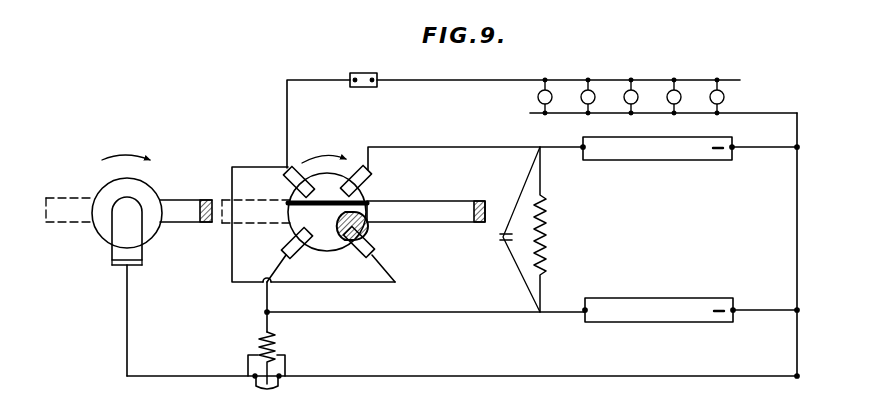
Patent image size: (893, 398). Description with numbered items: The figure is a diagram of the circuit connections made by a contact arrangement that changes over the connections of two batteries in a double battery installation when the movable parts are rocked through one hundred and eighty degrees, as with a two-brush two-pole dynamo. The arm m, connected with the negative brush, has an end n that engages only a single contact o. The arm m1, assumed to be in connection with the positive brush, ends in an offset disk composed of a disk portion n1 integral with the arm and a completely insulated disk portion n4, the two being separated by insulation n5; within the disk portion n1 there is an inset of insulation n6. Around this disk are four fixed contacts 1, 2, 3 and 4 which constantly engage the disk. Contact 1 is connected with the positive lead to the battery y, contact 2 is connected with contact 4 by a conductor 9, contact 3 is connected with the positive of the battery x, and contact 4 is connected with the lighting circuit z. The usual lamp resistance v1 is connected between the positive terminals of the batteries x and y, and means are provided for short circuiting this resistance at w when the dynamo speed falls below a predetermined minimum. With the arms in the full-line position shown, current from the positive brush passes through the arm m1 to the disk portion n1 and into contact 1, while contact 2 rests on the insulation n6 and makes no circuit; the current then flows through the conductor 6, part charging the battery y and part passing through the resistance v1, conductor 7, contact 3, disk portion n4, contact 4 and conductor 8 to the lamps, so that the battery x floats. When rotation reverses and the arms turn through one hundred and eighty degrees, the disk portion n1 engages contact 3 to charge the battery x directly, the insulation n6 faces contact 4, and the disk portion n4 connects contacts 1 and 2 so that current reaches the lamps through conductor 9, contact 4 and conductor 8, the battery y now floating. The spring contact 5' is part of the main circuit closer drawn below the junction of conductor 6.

The end of arm m n is at (145, 186).
The arm m is at (176, 218).
The contact o is at (134, 255).
The disk portion n1 is at (322, 250).
The insulated disk portion n4 is at (326, 172).
The insulation n5 is at (289, 198).
The inset of insulation n6 is at (362, 229).
The fixed contact 1 is at (290, 242).
The fixed contact 2 is at (372, 250).
The fixed contact 3 is at (366, 183).
The fixed contact 4 is at (294, 168).
The arm m1 is at (432, 226).
The short-circuiting means w is at (509, 229).
The lamp resistance v1 is at (549, 222).
The conductor 6 is at (408, 311).
The conductor 7 is at (447, 152).
The conductor 8 is at (303, 83).
The conductor 9 is at (300, 285).
The battery x is at (660, 162).
The battery y is at (671, 303).
The lighting circuit z is at (608, 80).
The spring contact 5' is at (278, 364).